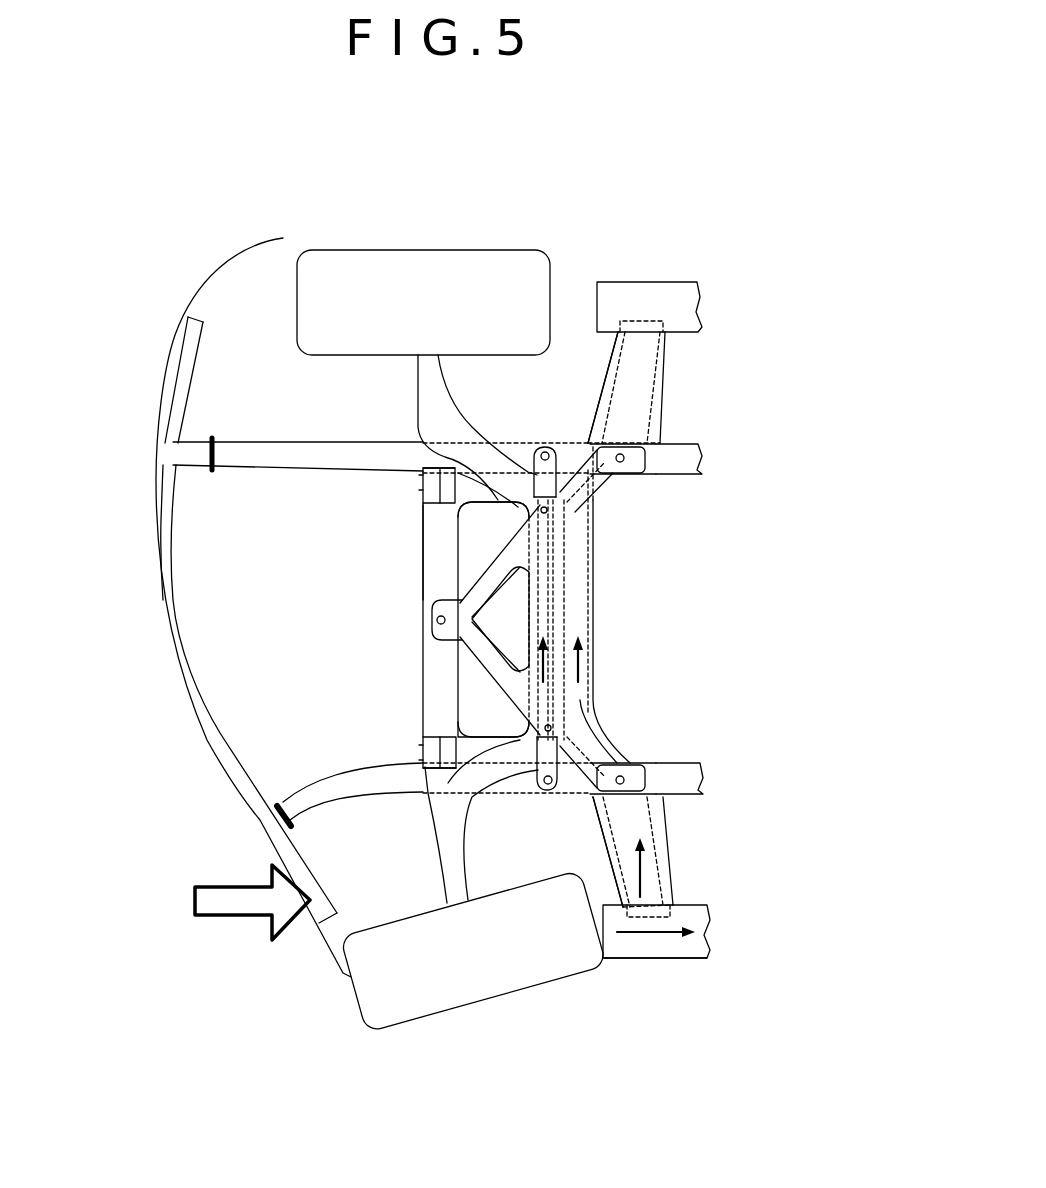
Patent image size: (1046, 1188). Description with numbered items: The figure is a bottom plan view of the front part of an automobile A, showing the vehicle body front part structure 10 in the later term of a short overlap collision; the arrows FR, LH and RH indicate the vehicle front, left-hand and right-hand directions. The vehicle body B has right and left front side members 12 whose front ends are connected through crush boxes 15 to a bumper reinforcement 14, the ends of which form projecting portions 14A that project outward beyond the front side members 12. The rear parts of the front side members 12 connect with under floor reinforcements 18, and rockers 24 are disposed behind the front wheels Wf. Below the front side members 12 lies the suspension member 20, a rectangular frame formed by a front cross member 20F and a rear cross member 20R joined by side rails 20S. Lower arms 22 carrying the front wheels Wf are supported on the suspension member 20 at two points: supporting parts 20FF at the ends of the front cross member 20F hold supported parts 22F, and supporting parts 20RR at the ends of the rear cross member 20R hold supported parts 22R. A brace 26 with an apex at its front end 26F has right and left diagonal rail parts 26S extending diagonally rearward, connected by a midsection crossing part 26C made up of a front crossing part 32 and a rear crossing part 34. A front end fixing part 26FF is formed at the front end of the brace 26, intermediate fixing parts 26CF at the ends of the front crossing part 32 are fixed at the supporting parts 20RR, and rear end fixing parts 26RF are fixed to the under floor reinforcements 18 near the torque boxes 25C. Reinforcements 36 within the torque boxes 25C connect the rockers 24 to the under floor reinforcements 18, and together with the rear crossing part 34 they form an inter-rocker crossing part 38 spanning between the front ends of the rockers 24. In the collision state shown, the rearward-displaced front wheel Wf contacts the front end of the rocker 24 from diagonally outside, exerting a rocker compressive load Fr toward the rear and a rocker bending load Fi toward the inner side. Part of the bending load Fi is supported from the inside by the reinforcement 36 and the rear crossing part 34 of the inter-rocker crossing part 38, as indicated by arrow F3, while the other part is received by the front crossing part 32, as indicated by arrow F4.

The vehicle body front part structure 10 is at (603, 253).
The front side member 12 is at (288, 466).
The bumper reinforcement 14 is at (295, 620).
The projecting portion 14A is at (190, 384).
The crush box 15 is at (210, 470).
The under floor reinforcement 18 is at (688, 447).
The suspension member 20 is at (543, 650).
The front cross member 20F is at (427, 577).
The supporting part 20FF is at (362, 660).
The rear cross member 20R is at (550, 580).
The supporting part 20RR is at (676, 618).
The side rail 20S is at (478, 494).
The lower arm 22 is at (437, 363).
The supported part 22F is at (427, 517).
The supported part 22R is at (545, 617).
The rocker 24 is at (683, 620).
The torque box 25C is at (588, 422).
The brace 26 is at (566, 621).
The midsection crossing part 26C is at (682, 605).
The intermediate fixing part 26CF is at (555, 510).
The front end 26F is at (387, 633).
The front end fixing part 26FF is at (433, 630).
The rear end fixing part 26RF is at (655, 445).
The diagonal rail part 26S is at (487, 573).
The front crossing part 32 is at (545, 575).
The rear crossing part 34 is at (577, 583).
The reinforcement 36 is at (650, 619).
The inter-rocker crossing part 38 is at (648, 352).
The automobile A is at (263, 238).
The vehicle body B is at (705, 967).
The front wheel wf is at (432, 250).
The arrow F3 is at (582, 660).
The arrow F4 is at (540, 657).
The rocker bending load Fi is at (642, 862).
The rocker compressive load Fr is at (652, 960).
The arrow LH is at (120, 287).
The arrow RH is at (122, 950).
The arrow FR is at (80, 607).